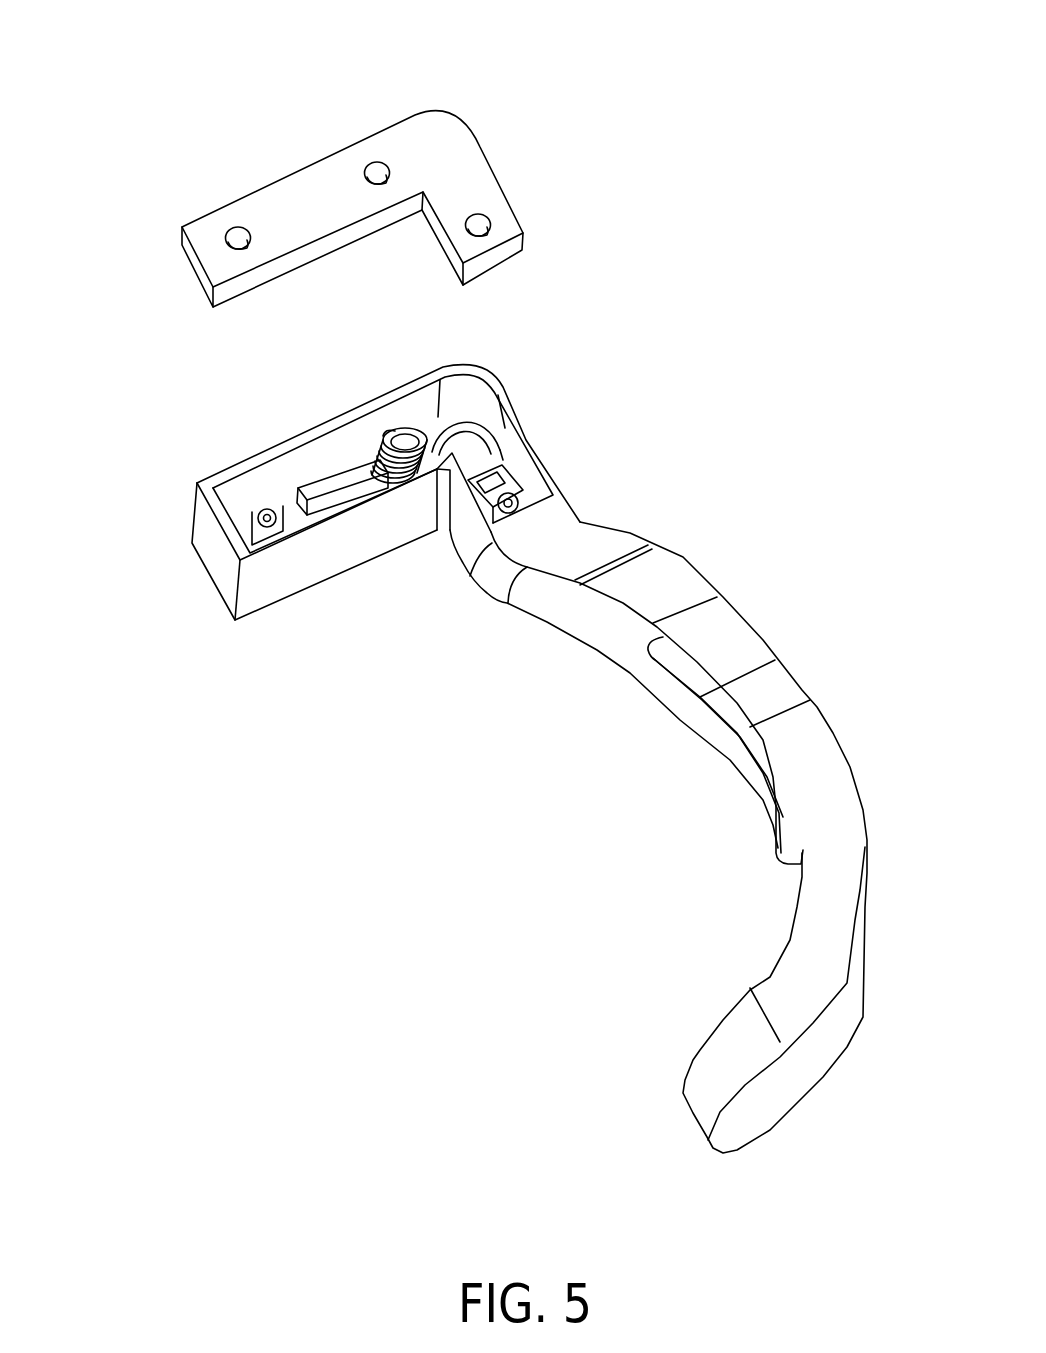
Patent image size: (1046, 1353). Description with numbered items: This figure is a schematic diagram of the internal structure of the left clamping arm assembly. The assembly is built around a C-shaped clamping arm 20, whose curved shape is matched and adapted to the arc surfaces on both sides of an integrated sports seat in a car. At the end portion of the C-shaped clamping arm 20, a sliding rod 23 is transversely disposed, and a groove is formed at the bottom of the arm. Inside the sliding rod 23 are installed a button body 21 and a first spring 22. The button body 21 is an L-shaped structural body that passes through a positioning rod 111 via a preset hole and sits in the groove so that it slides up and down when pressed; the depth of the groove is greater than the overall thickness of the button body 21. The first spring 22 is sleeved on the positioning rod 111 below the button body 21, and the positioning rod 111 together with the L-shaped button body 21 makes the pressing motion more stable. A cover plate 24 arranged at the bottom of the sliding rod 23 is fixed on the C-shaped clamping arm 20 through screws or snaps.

The C-shaped clamping arm 20 is at (645, 573).
The button body 21 is at (490, 467).
The first spring 22 is at (433, 430).
The sliding rod 23 is at (240, 477).
The cover plate 24 is at (448, 152).
The positioning rod 111 is at (393, 430).